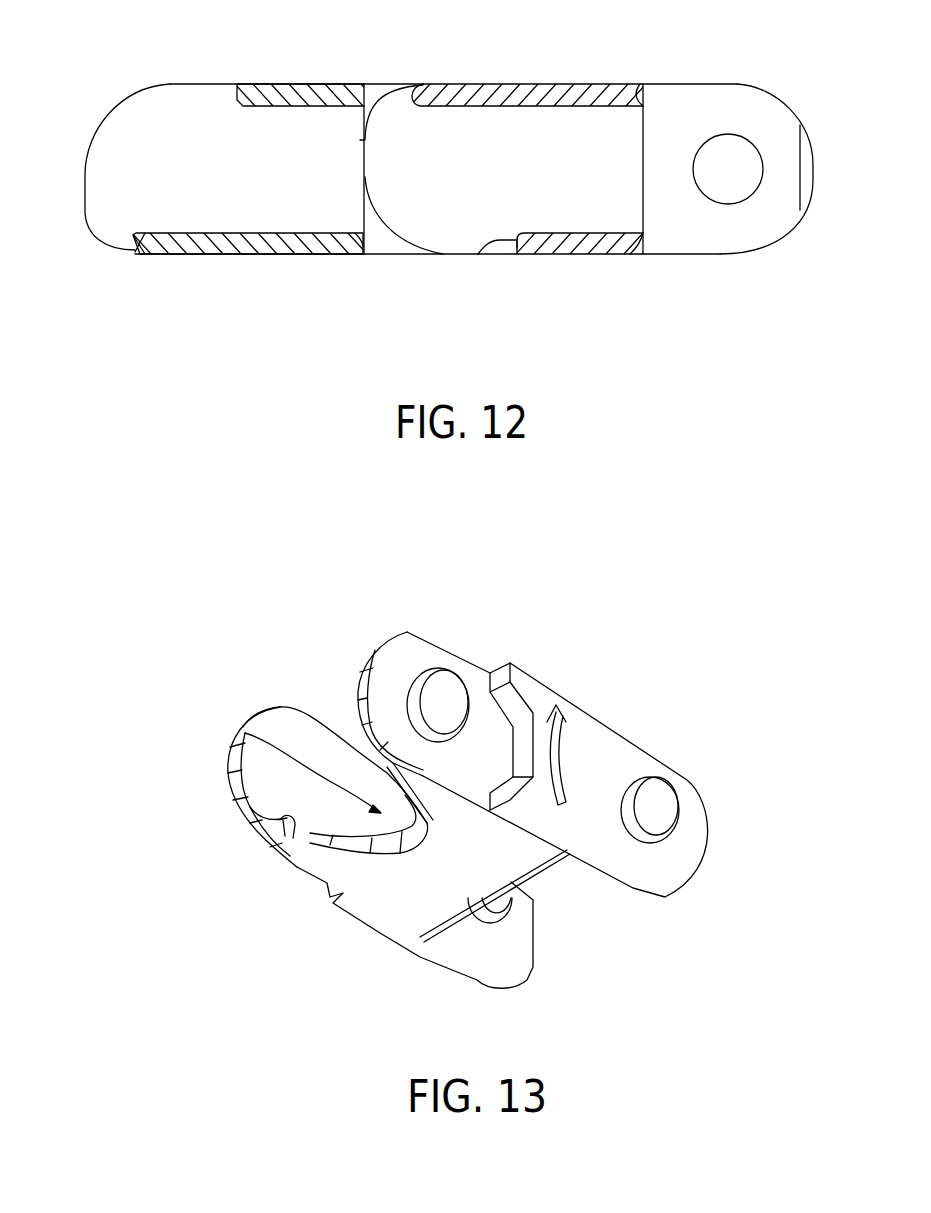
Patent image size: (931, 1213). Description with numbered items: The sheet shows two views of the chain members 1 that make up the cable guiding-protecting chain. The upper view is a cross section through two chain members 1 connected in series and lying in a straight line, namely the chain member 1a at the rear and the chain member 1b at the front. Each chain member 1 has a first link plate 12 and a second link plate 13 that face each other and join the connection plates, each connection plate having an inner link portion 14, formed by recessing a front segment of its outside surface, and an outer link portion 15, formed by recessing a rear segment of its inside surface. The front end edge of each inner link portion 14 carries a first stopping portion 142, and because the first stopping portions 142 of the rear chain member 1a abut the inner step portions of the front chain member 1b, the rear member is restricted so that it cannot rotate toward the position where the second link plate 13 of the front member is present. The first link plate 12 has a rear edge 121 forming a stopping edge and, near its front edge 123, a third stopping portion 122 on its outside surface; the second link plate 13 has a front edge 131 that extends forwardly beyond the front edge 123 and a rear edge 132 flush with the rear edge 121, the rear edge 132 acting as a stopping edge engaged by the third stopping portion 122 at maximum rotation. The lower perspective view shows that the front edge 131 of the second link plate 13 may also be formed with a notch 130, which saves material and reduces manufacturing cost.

In FIG. 13, the chain member 1 is at (634, 701).
In FIG. 12, the chain member at the rear 1a is at (745, 70).
In FIG. 12, the chain member at the front 1b is at (120, 90).
In FIG. 12, the first link plate 12 is at (282, 95).
In FIG. 13, the first link plate 12 is at (348, 733).
In FIG. 12, the second link plate 13 is at (517, 95).
In FIG. 13, the second link plate 13 is at (400, 912).
In FIG. 12, the inner link portion 14 is at (127, 133).
In FIG. 12, the outer link portion 15 is at (378, 92).
In FIG. 12, the rear edge of the first link plate 121 is at (640, 240).
In FIG. 12, the third stopping portion 122 is at (524, 237).
In FIG. 12, the front edge of the first link plate 123 is at (484, 256).
In FIG. 13, the notch 130 is at (243, 730).
In FIG. 12, the front edge of the second link plate 131 is at (145, 243).
In FIG. 13, the front edge of the second link plate 131 is at (240, 803).
In FIG. 12, the rear edge of the second link plate 132 is at (361, 243).
In FIG. 13, the rear edge of the second link plate 132 is at (547, 867).
In FIG. 12, the first stopping portion 142 is at (360, 140).